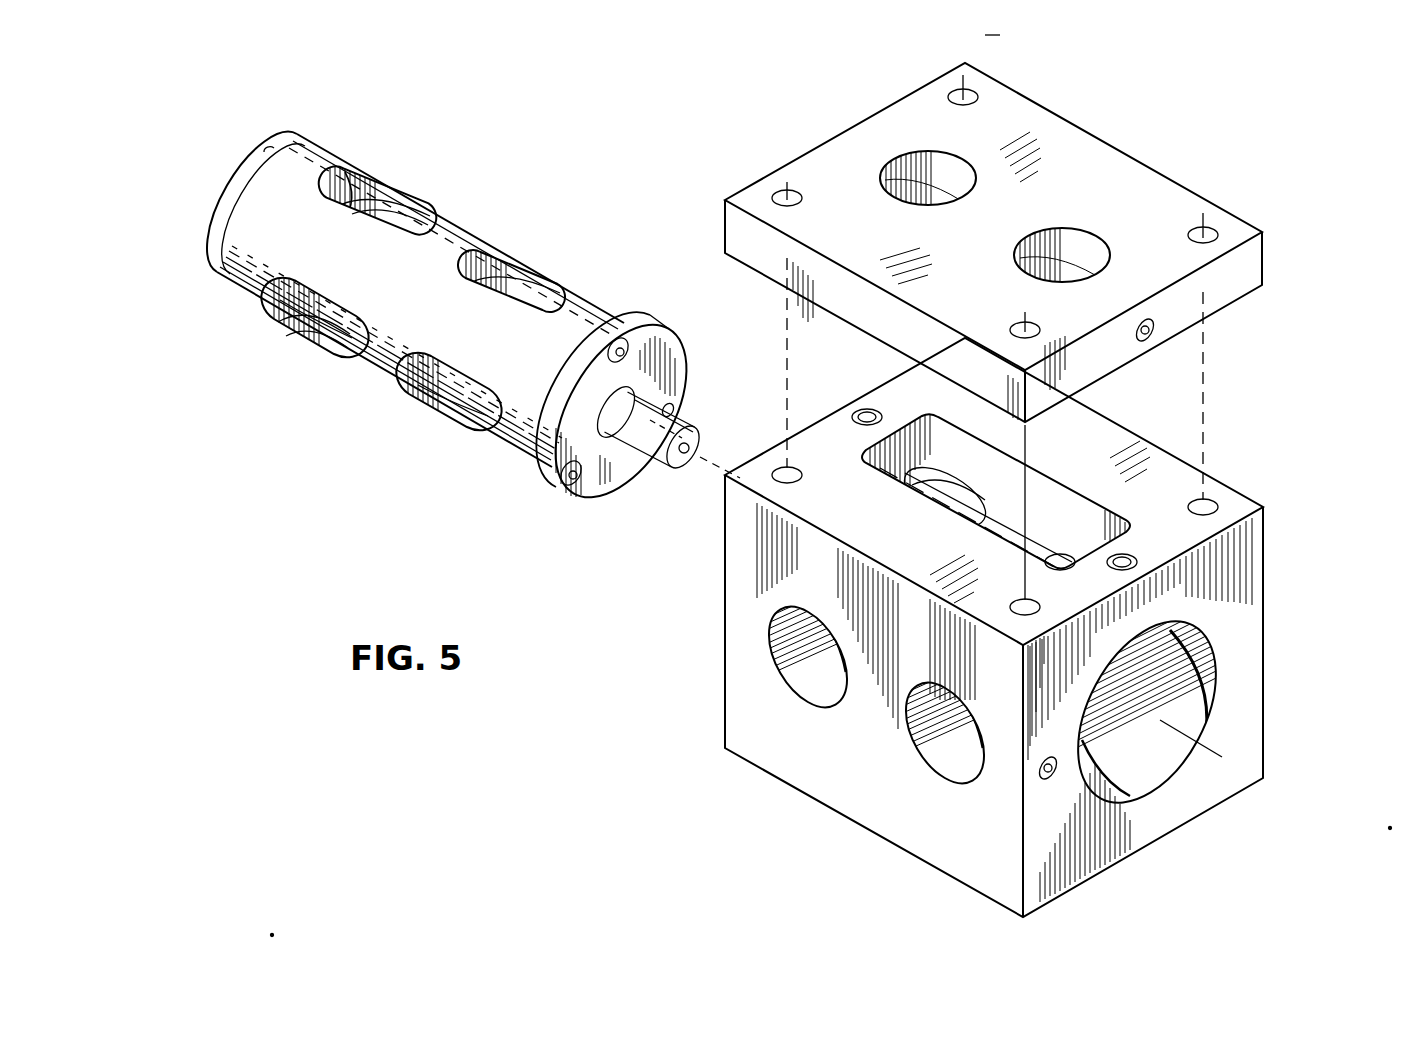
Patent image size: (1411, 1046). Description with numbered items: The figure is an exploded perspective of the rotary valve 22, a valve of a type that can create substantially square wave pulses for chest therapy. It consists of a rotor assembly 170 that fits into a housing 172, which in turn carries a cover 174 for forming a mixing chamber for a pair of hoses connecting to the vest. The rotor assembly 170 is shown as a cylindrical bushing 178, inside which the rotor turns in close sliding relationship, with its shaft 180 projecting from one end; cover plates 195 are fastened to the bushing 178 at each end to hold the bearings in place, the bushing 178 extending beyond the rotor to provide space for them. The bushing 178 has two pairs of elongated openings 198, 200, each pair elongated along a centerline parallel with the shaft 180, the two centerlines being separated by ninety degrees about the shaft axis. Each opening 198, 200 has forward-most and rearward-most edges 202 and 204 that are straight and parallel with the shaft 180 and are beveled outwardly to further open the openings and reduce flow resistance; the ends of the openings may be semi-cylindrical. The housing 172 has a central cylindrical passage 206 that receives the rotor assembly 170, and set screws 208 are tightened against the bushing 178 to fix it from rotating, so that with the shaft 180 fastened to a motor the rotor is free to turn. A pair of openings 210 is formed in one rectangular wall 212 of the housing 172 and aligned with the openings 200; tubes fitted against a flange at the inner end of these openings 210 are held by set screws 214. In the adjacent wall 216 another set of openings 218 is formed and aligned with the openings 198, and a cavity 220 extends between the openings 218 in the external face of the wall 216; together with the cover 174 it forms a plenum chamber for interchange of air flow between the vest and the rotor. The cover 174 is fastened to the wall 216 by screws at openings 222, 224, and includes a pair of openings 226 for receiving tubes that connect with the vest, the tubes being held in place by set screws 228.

The rotary valve 22 is at (622, 160).
The rotor assembly 170 is at (290, 124).
The housing 172 is at (1280, 648).
The cover 174 is at (1050, 98).
The bushing 178 is at (462, 206).
The shaft 180 is at (676, 460).
The cover plates 195 is at (212, 226).
The elongated openings 198 is at (350, 172).
The elongated openings 200 is at (268, 314).
The forward-most edge 202 is at (319, 340).
The rearward-most edge 204 is at (390, 206).
The central cylindrical passage 206 is at (1215, 698).
The set screws 208 is at (865, 408).
The openings 210 is at (780, 661).
The rectangular wall 212 is at (852, 766).
The set screws 214 is at (1060, 778).
The wall 216 is at (917, 544).
The openings 218 is at (1062, 555).
The cavity 220 is at (868, 445).
The openings 222 is at (1207, 228).
The openings 224 is at (1210, 503).
The openings 226 is at (895, 165).
The set screws 228 is at (1160, 334).